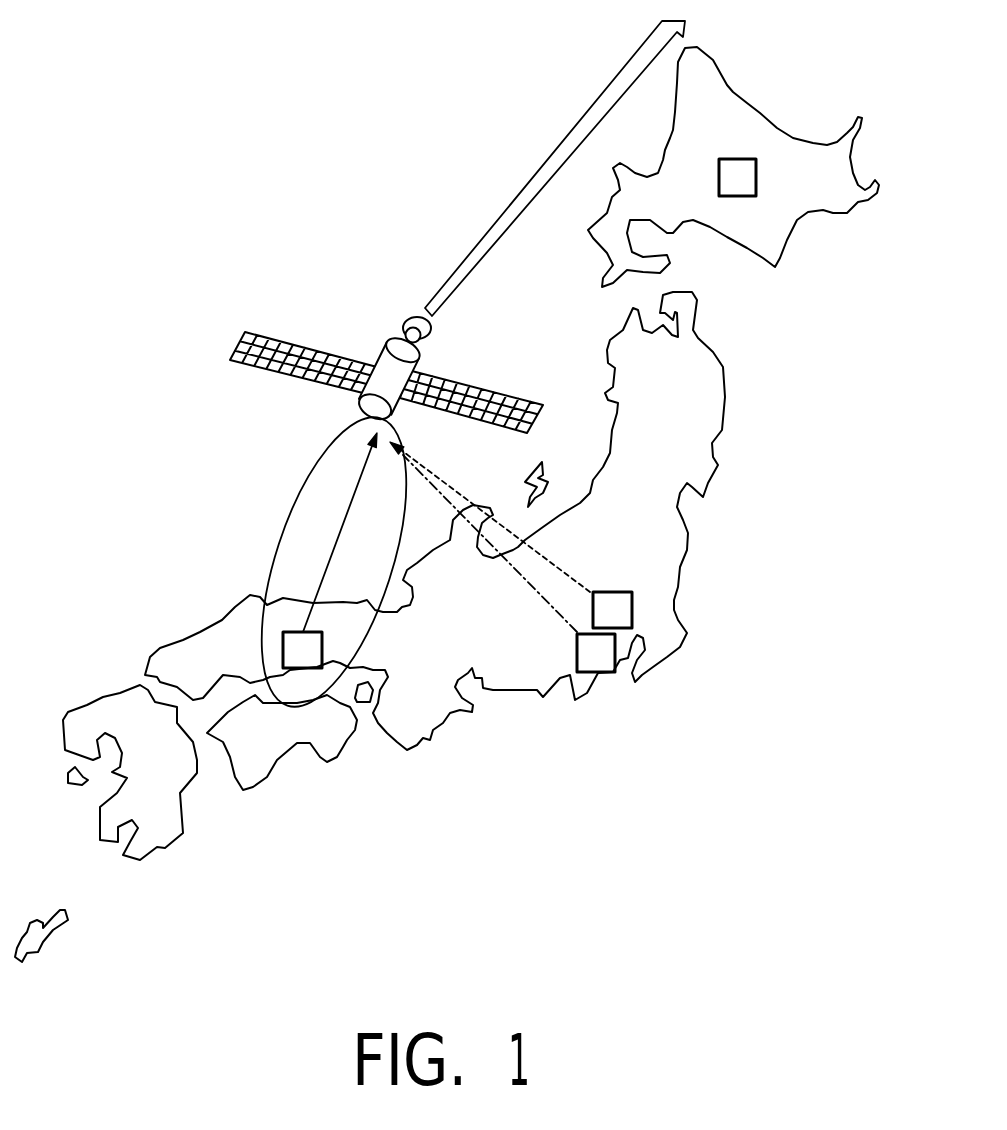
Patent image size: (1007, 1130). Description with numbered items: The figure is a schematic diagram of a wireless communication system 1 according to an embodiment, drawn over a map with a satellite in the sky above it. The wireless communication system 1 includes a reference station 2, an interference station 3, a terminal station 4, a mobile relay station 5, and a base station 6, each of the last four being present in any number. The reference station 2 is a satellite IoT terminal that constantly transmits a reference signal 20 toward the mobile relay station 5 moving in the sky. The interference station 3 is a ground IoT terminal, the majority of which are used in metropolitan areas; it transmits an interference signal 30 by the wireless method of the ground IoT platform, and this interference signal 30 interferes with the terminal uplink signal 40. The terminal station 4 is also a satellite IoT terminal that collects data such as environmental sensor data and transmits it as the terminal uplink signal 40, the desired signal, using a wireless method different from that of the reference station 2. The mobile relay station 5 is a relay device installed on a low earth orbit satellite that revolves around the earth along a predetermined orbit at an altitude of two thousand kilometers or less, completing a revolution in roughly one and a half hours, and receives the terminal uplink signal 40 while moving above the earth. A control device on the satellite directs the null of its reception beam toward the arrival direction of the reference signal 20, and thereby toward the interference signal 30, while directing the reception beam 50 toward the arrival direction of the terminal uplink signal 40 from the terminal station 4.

The wireless communication system 1 is at (349, 160).
The reference station 2 is at (595, 662).
The interference station 3 is at (620, 608).
The terminal station 4 is at (297, 650).
The mobile relay station 5 is at (297, 342).
The base station 6 is at (738, 170).
The reference signal 20 is at (560, 595).
The interference signal 30 is at (560, 580).
The terminal uplink signal 40 is at (333, 545).
The reception beam 50 is at (315, 472).